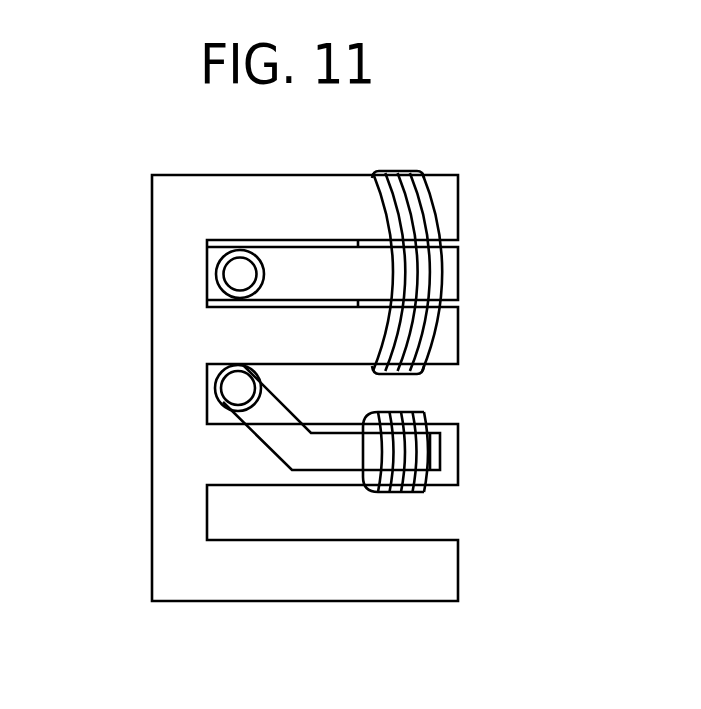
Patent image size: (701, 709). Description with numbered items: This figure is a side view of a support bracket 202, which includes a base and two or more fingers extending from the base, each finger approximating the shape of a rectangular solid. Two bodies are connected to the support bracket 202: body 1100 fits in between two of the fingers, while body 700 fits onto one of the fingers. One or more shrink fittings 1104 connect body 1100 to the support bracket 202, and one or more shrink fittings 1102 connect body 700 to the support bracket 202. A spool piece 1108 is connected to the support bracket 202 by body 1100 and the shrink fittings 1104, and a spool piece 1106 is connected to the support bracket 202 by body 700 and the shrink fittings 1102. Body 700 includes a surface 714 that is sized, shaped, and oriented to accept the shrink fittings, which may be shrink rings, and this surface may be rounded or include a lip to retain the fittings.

The support bracket 202 is at (292, 601).
The body 1100 is at (458, 268).
The shrink fittings 1104 is at (425, 171).
The spool piece 1108 is at (240, 274).
The spool piece 1106 is at (244, 399).
The surface 714 is at (367, 457).
The body 700 is at (440, 450).
The shrink fittings 1102 is at (404, 410).